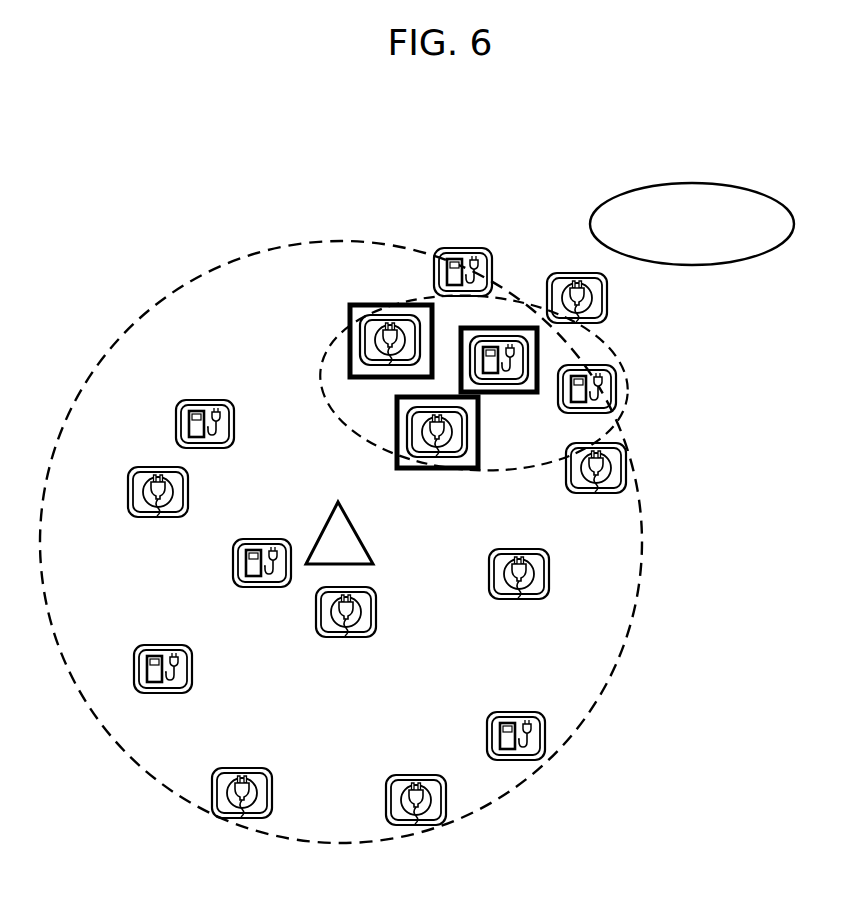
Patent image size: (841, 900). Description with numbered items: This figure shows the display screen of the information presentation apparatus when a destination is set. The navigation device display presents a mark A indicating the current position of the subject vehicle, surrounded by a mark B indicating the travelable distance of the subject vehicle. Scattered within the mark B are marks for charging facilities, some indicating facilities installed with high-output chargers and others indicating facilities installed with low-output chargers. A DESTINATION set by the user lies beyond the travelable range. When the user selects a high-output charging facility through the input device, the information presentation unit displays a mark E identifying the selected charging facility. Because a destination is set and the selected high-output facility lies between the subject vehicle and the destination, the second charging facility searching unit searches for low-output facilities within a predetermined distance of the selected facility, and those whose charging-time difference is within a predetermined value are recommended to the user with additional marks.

The mark indicating current position of the vehicle A is at (360, 528).
The mark indicating travelable distance B is at (283, 243).
The mark identifying selected charging facility E is at (503, 328).
The destination DESTINATION is at (692, 224).